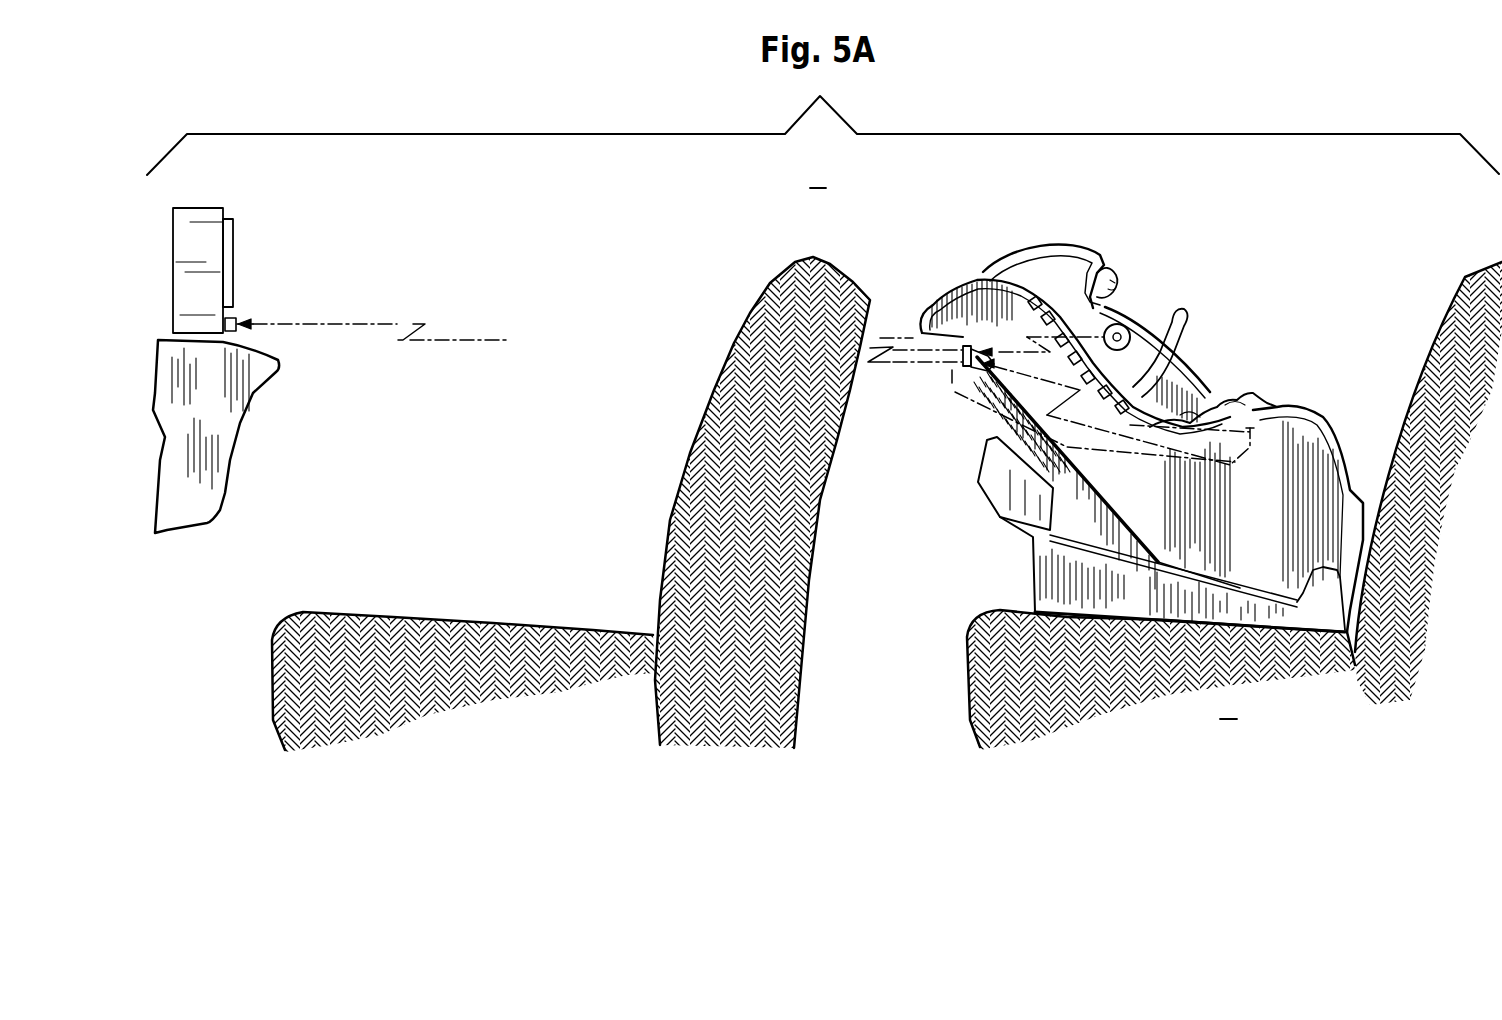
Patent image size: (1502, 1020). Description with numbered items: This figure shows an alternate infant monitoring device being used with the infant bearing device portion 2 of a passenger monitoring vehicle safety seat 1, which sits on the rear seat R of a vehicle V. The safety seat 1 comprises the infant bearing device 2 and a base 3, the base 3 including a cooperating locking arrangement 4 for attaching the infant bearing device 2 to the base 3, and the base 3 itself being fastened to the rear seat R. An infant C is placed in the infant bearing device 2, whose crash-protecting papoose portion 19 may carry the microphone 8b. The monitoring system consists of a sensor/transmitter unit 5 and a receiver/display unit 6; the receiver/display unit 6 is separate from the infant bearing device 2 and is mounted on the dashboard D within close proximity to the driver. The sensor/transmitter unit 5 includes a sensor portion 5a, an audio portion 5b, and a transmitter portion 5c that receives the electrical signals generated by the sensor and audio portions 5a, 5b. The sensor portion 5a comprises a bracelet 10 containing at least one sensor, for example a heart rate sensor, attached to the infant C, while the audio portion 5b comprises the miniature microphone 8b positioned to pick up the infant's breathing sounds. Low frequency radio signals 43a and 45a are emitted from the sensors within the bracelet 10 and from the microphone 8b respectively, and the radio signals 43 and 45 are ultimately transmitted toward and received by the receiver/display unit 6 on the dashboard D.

The passenger monitoring vehicle safety seat 1 is at (1268, 332).
The infant bearing device 2 is at (1170, 494).
The base 3 is at (1092, 593).
The cooperating locking arrangement 4 is at (993, 493).
The sensor/transmitter unit 5 is at (972, 372).
The sensor portion 5a is at (1251, 393).
The audio portion 5b is at (1127, 309).
The transmitter portion 5c is at (952, 383).
The receiver/display unit 6 is at (208, 210).
The miniature microphone 8b is at (1127, 327).
The bracelet 10 is at (1272, 420).
The crash-protecting papoose portion 19 is at (1052, 255).
The radio signal 43 is at (452, 340).
The low frequency radio signal 43a is at (1037, 375).
The radio signal 45 is at (885, 337).
The low frequency radio signal 45a is at (1003, 358).
The infant C is at (1127, 277).
The dashboard D is at (215, 377).
The vehicle V is at (818, 176).
The rear seat R is at (1228, 707).